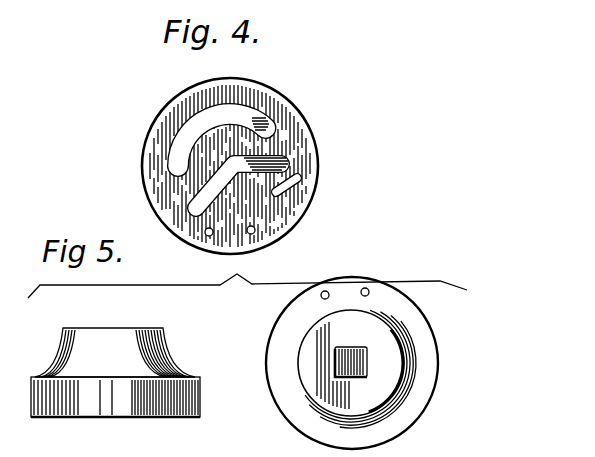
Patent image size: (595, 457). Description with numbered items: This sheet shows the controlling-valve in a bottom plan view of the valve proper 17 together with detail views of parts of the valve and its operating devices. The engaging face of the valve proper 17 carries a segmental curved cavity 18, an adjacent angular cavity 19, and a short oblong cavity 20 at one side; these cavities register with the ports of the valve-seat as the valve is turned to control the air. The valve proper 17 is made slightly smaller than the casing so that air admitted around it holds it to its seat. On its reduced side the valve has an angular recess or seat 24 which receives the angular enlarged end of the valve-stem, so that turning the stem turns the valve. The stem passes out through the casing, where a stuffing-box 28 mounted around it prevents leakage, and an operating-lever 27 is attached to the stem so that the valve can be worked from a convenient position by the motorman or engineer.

In FIG. 4, the valve proper 17 is at (290, 187).
In FIG. 5, the valve proper 17 is at (143, 344).
In FIG. 4, the segmental curved cavity 18 is at (208, 118).
In FIG. 4, the angular cavity 19 is at (242, 183).
In FIG. 4, the short oblong cavity 20 is at (309, 202).
In FIG. 5, the angular recess or seat 24 is at (356, 346).
In FIG. 4, the operating-lever 27 is at (208, 237).
In FIG. 5, the stuffing-box 28 is at (174, 380).